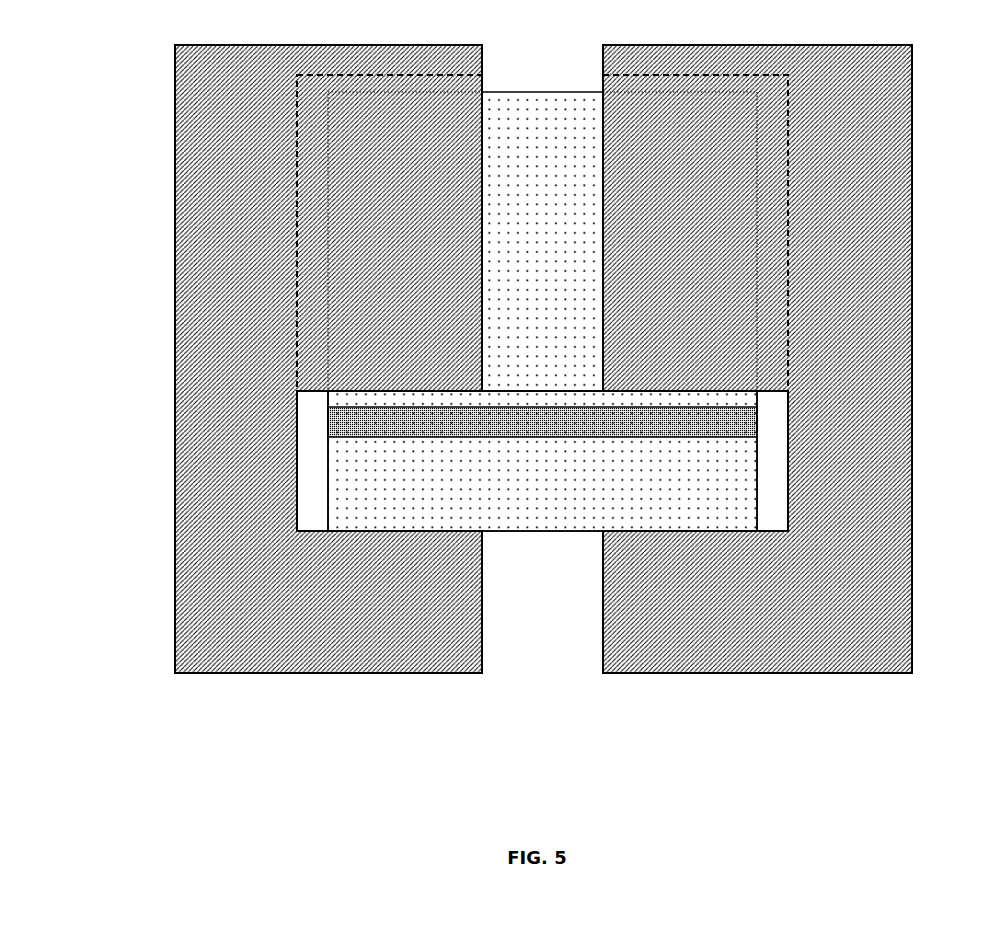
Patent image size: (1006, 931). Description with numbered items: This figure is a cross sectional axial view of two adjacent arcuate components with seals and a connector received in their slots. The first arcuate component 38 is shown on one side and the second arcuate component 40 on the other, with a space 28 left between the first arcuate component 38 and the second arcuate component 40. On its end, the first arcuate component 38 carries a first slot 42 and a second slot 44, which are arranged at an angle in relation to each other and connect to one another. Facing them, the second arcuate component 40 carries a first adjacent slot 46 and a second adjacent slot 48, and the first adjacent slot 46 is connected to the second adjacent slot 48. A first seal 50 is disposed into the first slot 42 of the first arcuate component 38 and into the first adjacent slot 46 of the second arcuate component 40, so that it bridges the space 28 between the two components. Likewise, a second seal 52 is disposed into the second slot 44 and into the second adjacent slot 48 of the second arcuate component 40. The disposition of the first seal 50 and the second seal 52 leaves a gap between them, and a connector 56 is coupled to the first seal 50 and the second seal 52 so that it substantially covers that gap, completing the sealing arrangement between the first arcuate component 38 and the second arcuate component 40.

The space 28 is at (525, 408).
The first arcuate component 38 is at (328, 359).
The second arcuate component 40 is at (757, 359).
The first slot 42 is at (297, 158).
The second slot 44 is at (297, 430).
The first adjacent slot 46 is at (790, 212).
The second adjacent slot 48 is at (790, 423).
The first seal 50 is at (542, 241).
The second seal 52 is at (542, 461).
The connector 56 is at (327, 421).